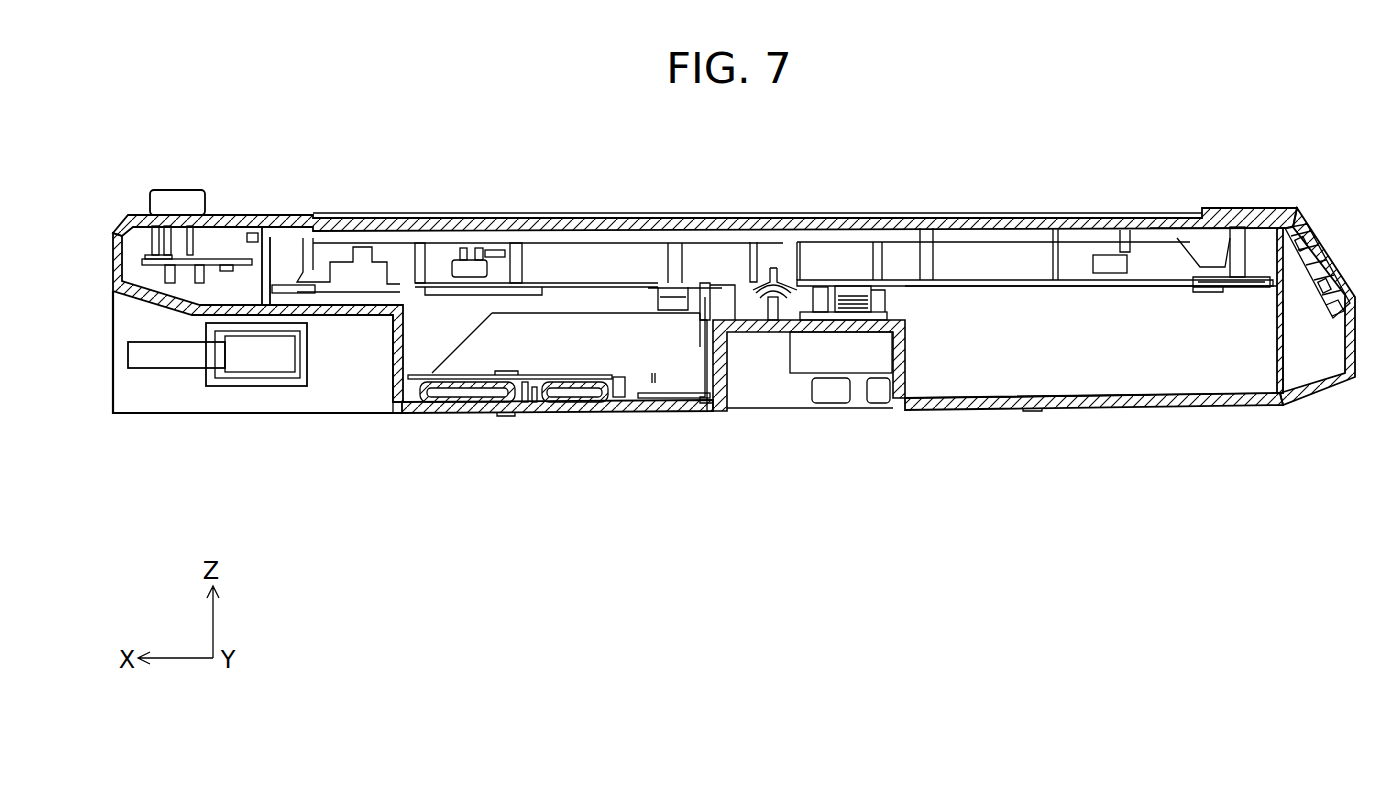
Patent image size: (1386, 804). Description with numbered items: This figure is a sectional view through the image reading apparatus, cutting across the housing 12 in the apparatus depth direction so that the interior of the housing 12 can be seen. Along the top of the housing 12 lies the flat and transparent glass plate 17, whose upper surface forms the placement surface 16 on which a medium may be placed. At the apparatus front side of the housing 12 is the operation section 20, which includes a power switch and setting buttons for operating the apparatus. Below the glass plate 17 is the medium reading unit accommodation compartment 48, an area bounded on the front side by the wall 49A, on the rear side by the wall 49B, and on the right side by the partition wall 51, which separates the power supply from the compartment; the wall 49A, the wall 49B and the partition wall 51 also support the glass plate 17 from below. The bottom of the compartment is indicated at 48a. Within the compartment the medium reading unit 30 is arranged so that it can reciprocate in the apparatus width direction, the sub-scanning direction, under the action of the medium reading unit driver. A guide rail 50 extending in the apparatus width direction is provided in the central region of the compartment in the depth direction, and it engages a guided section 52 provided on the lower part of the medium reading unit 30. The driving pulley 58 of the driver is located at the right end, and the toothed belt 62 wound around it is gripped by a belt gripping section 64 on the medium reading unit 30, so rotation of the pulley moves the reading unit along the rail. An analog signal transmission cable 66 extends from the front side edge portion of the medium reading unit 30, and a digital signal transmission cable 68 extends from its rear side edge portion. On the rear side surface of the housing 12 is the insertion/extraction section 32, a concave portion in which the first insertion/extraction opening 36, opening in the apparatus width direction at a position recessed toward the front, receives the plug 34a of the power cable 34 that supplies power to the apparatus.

The housing 12 is at (1181, 413).
The placement surface 16 is at (1058, 212).
The glass plate 17 is at (1117, 222).
The operation section 20 is at (1330, 236).
The medium reading unit 30 is at (632, 256).
The insertion/extraction section 32 is at (333, 386).
The power cable 34 is at (172, 357).
The plug 34a is at (247, 353).
The first insertion/extraction opening 36 is at (293, 360).
The medium reading unit accommodation compartment 48 is at (1000, 360).
The base bottom wall 48a is at (1090, 385).
The wall 49A is at (1278, 348).
The wall 49B is at (270, 274).
The guide rail 50 is at (740, 315).
The partition wall 51 is at (472, 312).
The guided section 52 is at (810, 290).
The driving pulley 58 is at (866, 295).
The toothed belt 62 is at (885, 305).
The belt gripping section 64 is at (843, 302).
The analog signal transmission cable 66 is at (1242, 278).
The digital signal transmission cable 68 is at (300, 282).